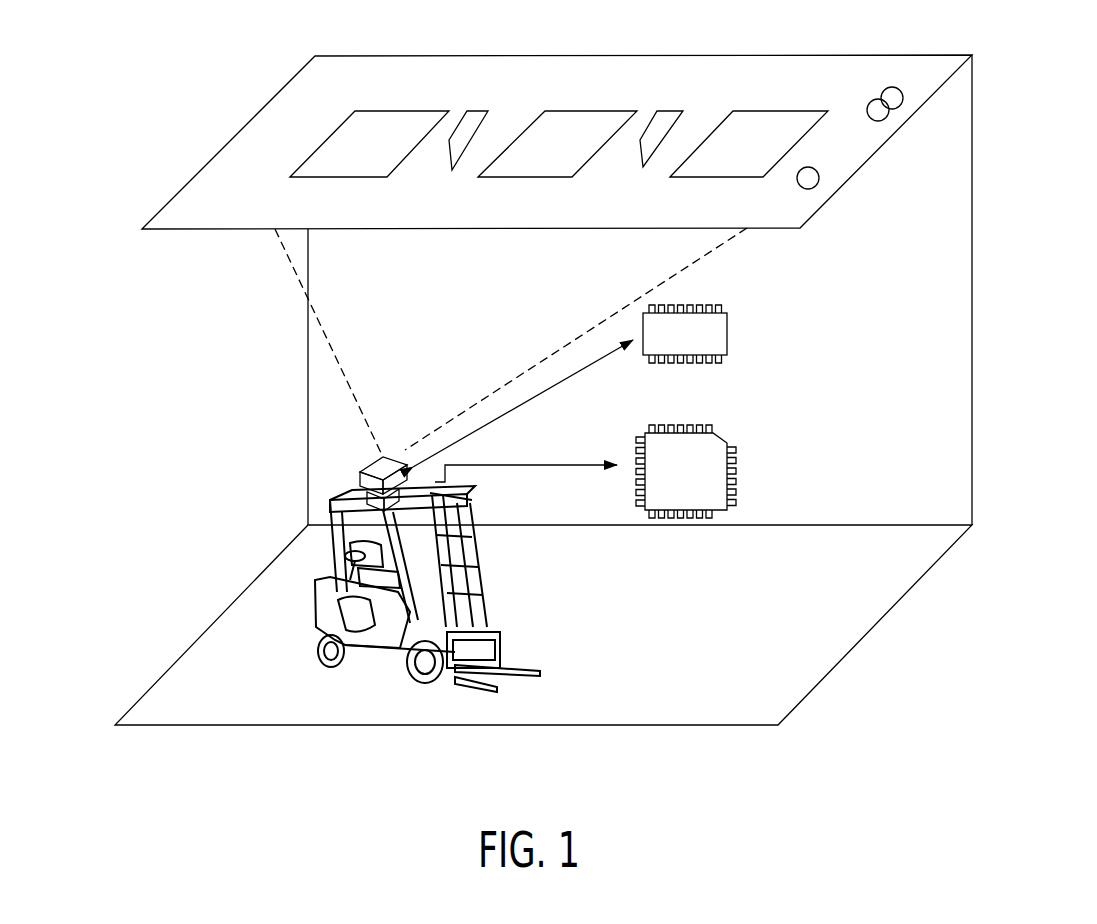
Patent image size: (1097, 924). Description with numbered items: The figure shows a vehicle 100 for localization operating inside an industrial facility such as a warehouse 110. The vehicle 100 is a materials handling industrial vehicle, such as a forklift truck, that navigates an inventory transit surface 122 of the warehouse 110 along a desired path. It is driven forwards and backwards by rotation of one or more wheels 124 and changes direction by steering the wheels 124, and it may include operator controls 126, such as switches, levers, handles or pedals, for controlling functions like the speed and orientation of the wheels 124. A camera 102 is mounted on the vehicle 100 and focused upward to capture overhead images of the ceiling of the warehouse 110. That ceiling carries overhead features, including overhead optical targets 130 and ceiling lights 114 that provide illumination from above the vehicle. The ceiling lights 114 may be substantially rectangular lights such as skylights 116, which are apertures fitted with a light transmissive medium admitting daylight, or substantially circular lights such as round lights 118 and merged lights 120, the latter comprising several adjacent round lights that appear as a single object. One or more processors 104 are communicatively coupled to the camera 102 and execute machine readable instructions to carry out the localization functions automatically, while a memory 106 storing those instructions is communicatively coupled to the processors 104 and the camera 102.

The vehicle 100 is at (367, 647).
The camera 102 is at (368, 490).
The processors 104 is at (727, 335).
The memory 106 is at (715, 434).
The warehouse 110 is at (118, 113).
The ceiling lights 114 is at (312, 135).
The skylights 116 is at (395, 111).
The round lights 118 is at (819, 182).
The merged lights 120 is at (862, 82).
The surface 122 is at (822, 655).
The wheels 124 is at (318, 662).
The operator controls 126 is at (316, 520).
The overhead optical targets 130 is at (482, 111).